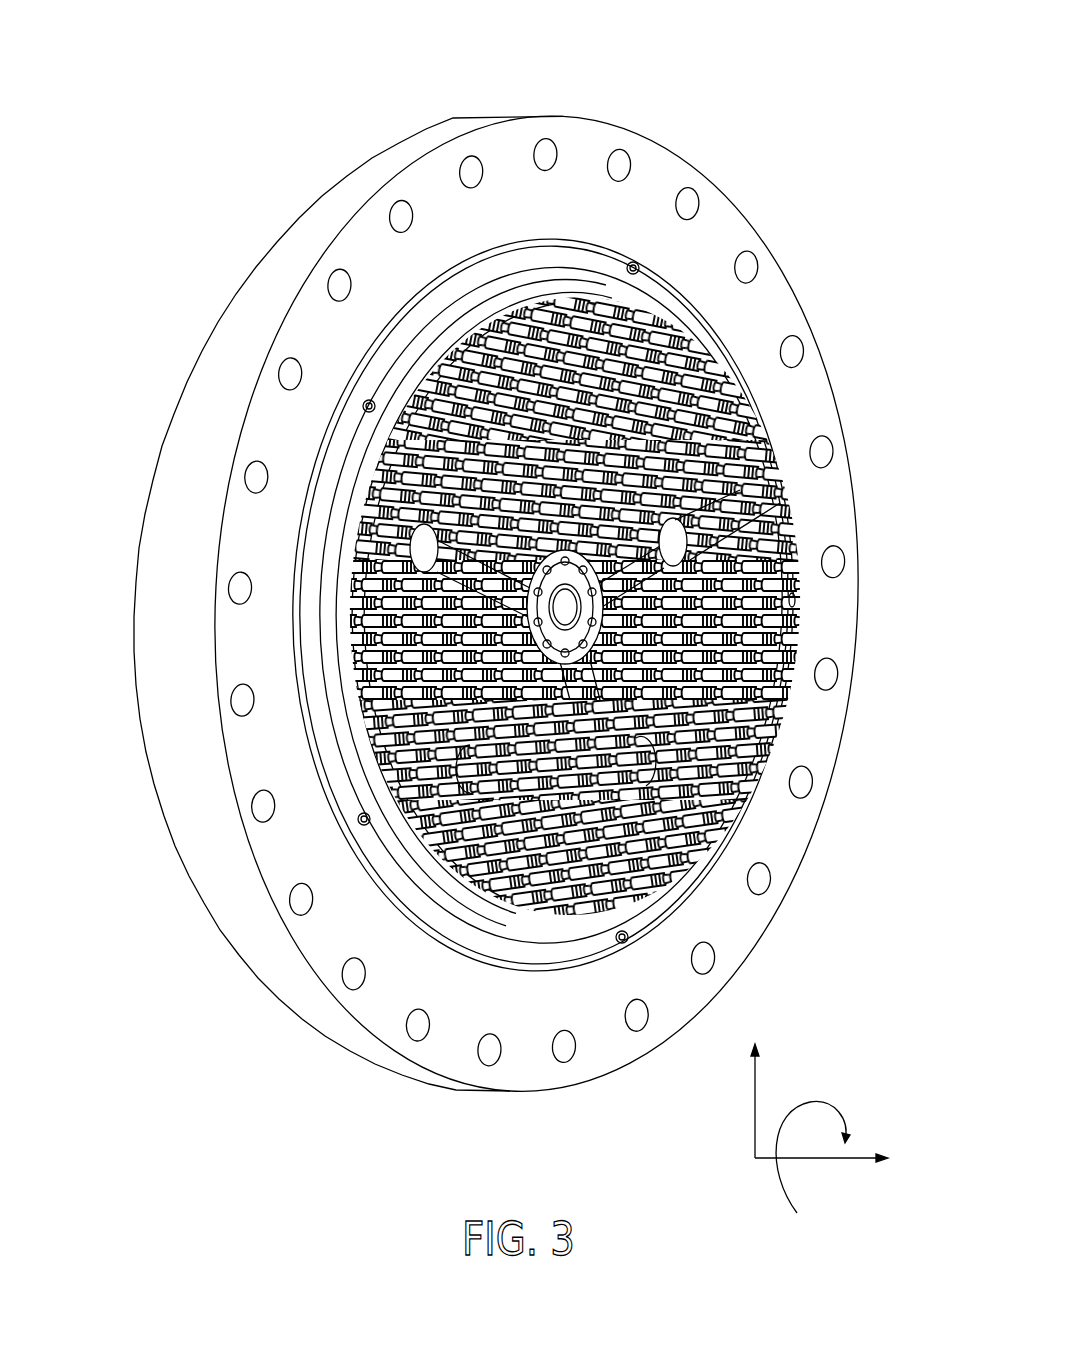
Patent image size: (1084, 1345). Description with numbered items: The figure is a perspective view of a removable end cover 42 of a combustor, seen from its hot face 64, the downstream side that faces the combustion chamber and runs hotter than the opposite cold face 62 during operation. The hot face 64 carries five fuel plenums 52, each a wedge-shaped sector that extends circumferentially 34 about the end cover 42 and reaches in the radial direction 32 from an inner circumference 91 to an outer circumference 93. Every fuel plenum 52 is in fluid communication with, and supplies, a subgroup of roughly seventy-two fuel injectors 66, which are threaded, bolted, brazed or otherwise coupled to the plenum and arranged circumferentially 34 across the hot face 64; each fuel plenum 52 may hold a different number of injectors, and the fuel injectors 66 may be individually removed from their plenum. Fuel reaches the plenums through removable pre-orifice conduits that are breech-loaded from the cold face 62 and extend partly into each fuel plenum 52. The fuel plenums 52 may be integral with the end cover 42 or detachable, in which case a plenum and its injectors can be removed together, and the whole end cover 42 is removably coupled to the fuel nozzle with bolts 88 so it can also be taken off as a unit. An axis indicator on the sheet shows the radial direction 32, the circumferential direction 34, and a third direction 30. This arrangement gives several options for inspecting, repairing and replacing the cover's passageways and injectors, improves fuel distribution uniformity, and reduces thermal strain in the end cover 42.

The end cover 42 is at (355, 84).
The fuel plenum 52 is at (503, 300).
The cold face 62 is at (200, 287).
The hot face 64 is at (880, 535).
The fuel injector 66 is at (760, 433).
The bolt 88 is at (240, 592).
The inner circumference 91 is at (607, 583).
The outer circumference 93 is at (780, 503).
The first axis 30 is at (815, 1162).
The radial direction 32 is at (755, 1108).
The circumferential direction 34 is at (778, 1183).